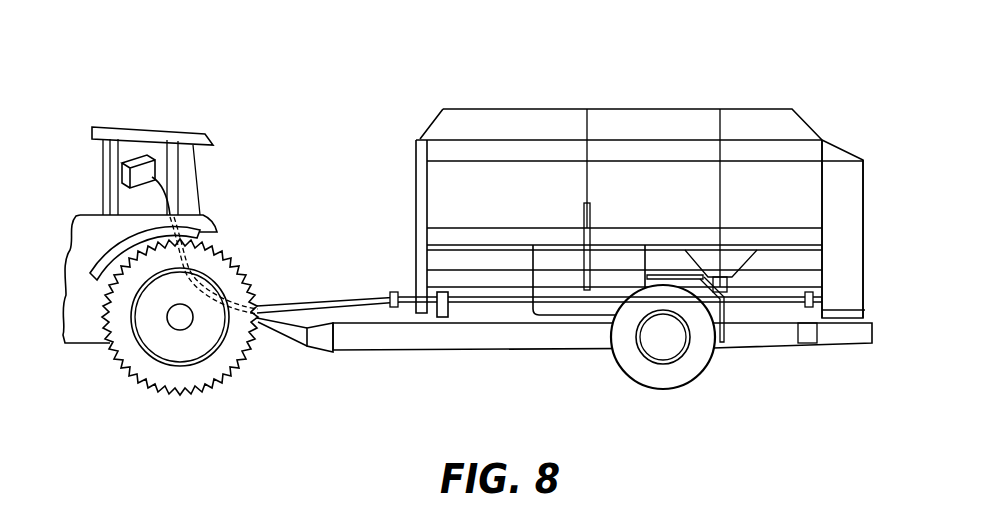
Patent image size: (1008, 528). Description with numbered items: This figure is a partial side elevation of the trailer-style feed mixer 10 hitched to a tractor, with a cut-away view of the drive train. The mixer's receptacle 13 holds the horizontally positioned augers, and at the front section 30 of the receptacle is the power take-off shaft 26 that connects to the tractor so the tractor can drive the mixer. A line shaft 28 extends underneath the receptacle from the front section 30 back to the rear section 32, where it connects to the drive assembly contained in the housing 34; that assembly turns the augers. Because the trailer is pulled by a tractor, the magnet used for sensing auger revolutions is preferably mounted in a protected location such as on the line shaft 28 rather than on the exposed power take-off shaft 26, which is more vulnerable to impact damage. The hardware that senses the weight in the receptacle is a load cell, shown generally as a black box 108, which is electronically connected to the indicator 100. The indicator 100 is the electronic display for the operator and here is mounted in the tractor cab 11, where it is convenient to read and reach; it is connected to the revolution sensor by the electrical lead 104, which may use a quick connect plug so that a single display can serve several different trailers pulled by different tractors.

The feed mixer 10 is at (811, 90).
The tractor cab 11 is at (136, 106).
The receptacle 13 is at (643, 170).
The power take-off shaft 26 is at (289, 303).
The line shaft 28 is at (503, 298).
The front section 30 is at (445, 207).
The rear section 32 is at (810, 213).
The housing 34 is at (845, 270).
The indicator 100 is at (145, 172).
The electrical lead 104 is at (295, 322).
The load cell 108 is at (435, 318).